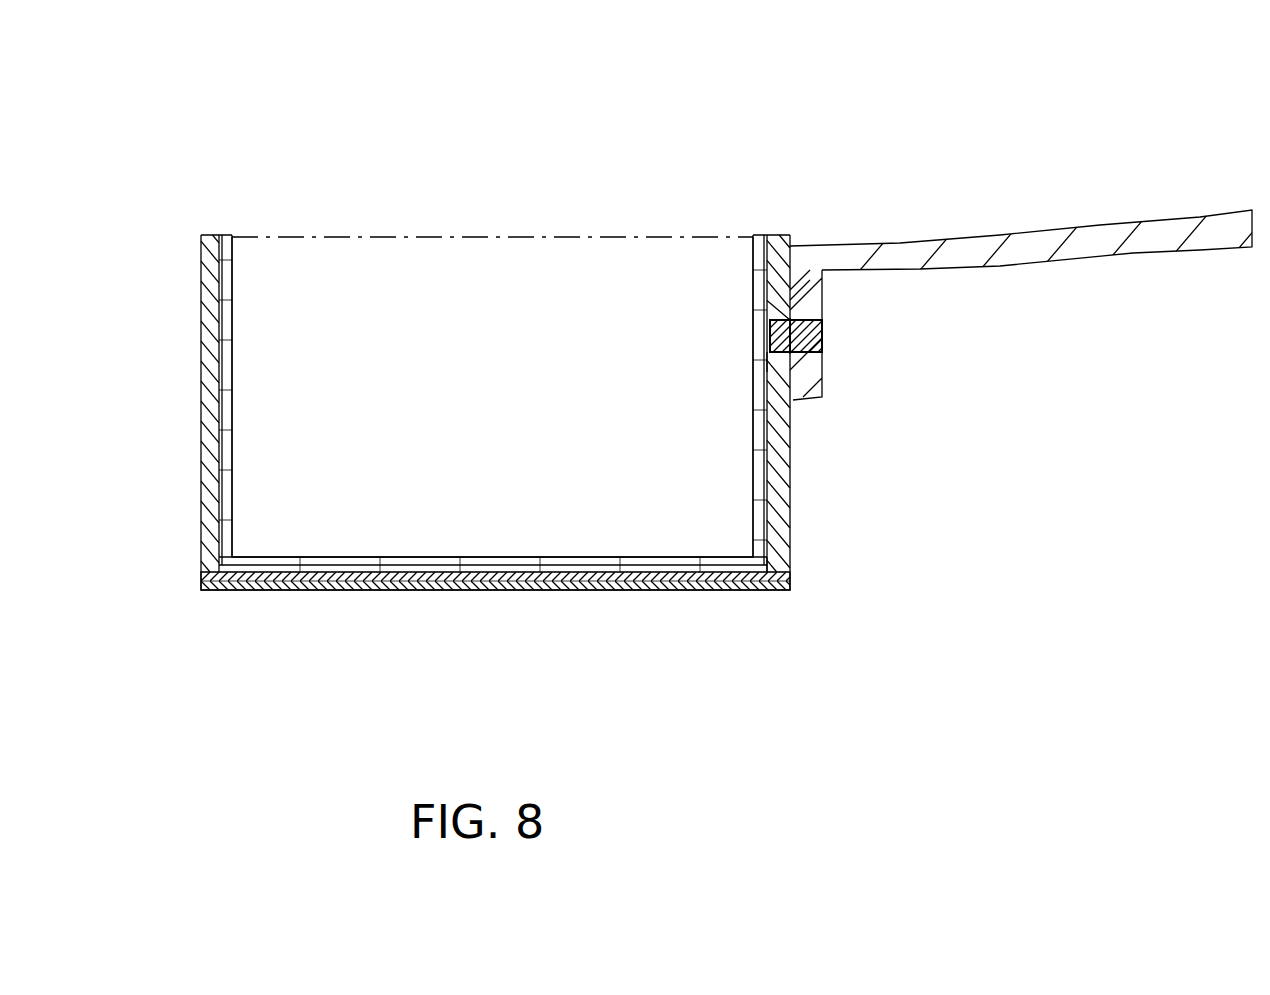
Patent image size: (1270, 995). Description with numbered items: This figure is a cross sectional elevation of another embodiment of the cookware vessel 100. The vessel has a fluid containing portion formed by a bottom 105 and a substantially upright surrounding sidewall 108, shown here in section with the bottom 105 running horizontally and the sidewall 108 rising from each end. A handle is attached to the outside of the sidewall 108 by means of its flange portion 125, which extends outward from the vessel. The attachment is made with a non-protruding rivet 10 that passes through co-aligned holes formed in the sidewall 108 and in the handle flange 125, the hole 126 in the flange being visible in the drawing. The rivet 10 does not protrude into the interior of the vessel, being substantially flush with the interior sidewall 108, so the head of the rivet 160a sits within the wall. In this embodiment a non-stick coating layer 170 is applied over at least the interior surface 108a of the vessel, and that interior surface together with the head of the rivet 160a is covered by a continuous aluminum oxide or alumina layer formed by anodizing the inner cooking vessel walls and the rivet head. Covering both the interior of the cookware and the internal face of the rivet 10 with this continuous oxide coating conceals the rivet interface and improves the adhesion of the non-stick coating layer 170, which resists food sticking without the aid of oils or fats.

The cookware vessel 100 is at (716, 164).
The bottom 105 is at (513, 598).
The sidewall 108 is at (821, 471).
The interior surface 108a is at (775, 386).
The head of the rivet 160a is at (790, 324).
The non-stick coating layer 170 is at (222, 393).
The flange portion 125 is at (1082, 212).
The hole 126 is at (822, 373).
The rivet 10 is at (820, 326).